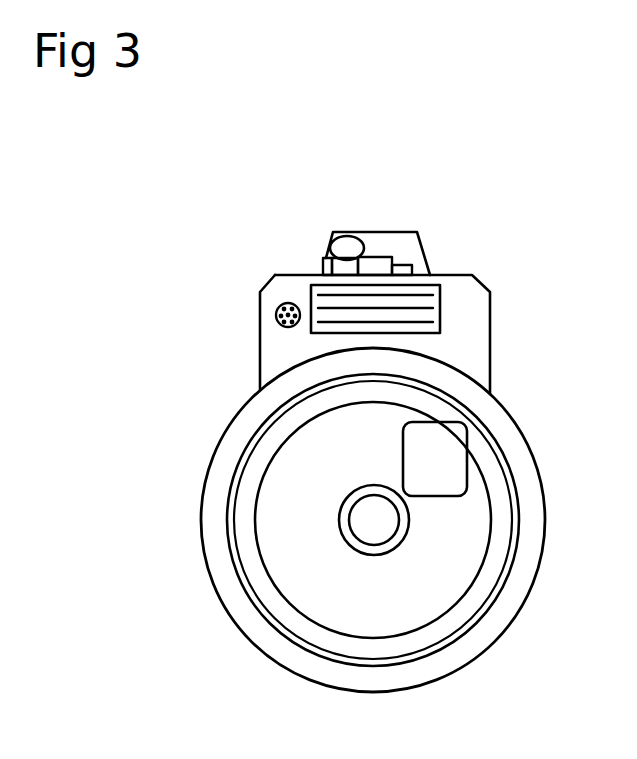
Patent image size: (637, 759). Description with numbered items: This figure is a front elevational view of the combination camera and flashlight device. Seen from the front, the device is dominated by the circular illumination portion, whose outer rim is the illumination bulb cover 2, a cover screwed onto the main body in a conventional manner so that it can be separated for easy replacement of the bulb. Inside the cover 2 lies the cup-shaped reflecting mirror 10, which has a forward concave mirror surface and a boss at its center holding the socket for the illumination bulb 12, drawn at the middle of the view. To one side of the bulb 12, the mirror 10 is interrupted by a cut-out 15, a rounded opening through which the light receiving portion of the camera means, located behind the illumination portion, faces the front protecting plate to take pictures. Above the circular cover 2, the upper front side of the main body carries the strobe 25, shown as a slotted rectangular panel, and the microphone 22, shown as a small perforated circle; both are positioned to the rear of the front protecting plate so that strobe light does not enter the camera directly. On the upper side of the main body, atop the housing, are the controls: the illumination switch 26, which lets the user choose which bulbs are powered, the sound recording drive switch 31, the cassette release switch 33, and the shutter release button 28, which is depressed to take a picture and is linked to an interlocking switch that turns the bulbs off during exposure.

The illumination bulb cover 2 is at (533, 528).
The reflecting mirror 10 is at (455, 567).
The illumination bulb 12 is at (365, 513).
The cut-out 15 is at (455, 435).
The microphone 22 is at (278, 313).
The strobe 25 is at (442, 295).
The illumination switch 26 is at (378, 263).
The shutter release button 28 is at (345, 250).
The sound recording drive switch 31 is at (322, 258).
The cassette release switch 33 is at (408, 266).